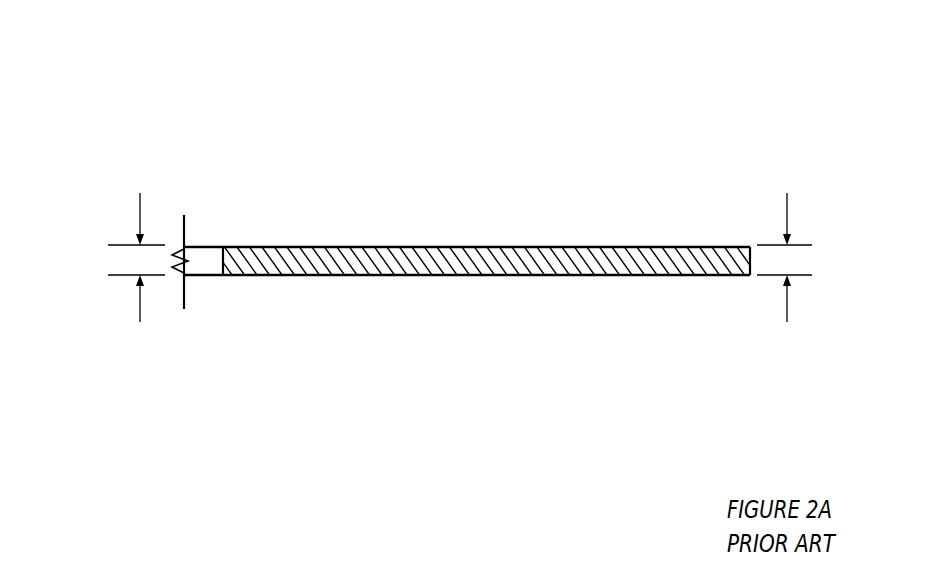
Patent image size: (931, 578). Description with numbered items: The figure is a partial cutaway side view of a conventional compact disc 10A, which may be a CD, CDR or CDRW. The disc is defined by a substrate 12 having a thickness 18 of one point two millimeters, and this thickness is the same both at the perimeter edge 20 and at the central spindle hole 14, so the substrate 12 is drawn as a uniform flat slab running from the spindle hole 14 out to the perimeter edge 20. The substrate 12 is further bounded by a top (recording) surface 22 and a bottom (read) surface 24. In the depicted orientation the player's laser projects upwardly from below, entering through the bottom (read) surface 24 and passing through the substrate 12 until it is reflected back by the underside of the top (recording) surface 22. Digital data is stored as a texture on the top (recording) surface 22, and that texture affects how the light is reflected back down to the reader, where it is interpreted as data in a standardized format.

The conventional compact disc 10A is at (197, 128).
The substrate 12 is at (443, 262).
The central spindle hole 14 is at (209, 226).
The thickness 18 is at (140, 263).
The perimeter edge 20 is at (751, 230).
The top (recording) surface 22 is at (347, 245).
The bottom (read) surface 24 is at (282, 277).